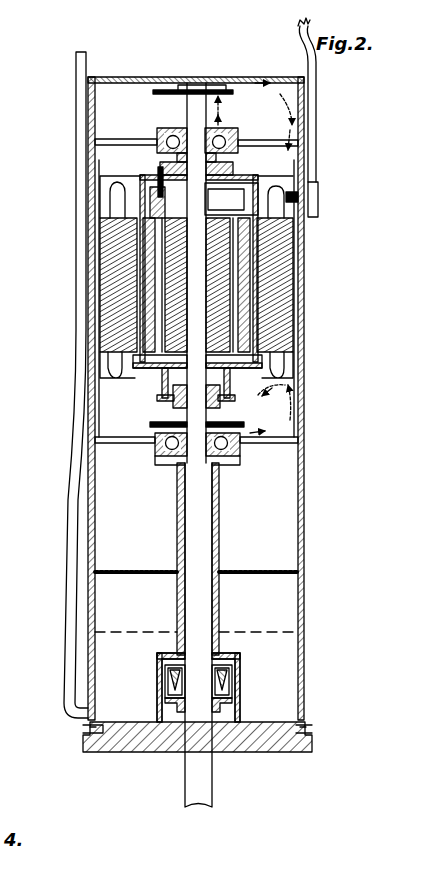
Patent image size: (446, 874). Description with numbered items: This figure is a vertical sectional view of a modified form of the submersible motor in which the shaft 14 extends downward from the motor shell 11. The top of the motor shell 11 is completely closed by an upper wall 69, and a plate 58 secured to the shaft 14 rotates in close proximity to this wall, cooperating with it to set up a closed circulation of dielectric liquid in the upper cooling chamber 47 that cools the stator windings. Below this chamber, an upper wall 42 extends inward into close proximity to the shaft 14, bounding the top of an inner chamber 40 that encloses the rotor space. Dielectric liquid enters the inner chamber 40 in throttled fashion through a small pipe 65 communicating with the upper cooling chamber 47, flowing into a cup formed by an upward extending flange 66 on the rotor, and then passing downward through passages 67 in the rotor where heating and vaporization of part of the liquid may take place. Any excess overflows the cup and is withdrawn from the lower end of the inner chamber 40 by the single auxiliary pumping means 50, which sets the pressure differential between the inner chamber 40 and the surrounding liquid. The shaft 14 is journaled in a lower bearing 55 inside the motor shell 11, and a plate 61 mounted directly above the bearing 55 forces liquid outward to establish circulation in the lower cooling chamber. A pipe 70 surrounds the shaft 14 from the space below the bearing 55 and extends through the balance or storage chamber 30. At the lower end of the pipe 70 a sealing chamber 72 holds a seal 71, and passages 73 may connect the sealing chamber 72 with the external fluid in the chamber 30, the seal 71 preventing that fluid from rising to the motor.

The motor shell 11 is at (306, 273).
The upper wall 69 is at (128, 77).
The shaft 14 is at (198, 90).
The plate 58 is at (228, 93).
The upper cooling chamber 47 is at (108, 163).
The upper wall 42 is at (224, 150).
The inner chamber 40 is at (250, 365).
The upward extending flange 66 is at (147, 198).
The pipe 65 is at (157, 190).
The passages 67 is at (145, 262).
The auxiliary pumping means 50 is at (156, 402).
The plate 61 is at (224, 420).
The lower bearing 55 is at (158, 456).
The pipe 70 is at (219, 601).
The balance or storage chamber 30 is at (277, 620).
The sealing chamber 72 is at (160, 663).
The seal 71 is at (165, 690).
The passages 73 is at (165, 708).